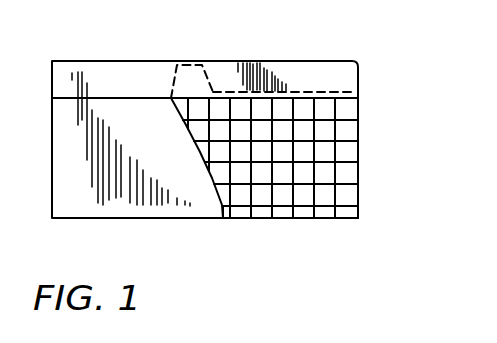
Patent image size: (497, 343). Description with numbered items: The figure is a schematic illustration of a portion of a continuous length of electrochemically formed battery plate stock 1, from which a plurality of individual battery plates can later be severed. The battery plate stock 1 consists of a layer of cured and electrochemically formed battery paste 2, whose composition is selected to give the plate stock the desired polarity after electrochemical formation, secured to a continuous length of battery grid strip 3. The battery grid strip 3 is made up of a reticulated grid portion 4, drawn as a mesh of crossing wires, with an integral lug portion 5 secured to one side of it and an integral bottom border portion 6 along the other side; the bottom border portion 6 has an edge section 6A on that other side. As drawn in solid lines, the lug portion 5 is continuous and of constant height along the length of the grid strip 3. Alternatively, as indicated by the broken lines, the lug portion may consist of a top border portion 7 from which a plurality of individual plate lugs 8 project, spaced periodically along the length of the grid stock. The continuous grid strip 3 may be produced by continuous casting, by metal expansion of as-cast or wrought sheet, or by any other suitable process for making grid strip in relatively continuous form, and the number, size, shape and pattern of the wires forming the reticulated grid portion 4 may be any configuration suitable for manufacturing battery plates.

The battery plate stock 1 is at (150, 46).
The battery paste 2 is at (140, 210).
The battery grid strip 3 is at (336, 153).
The reticulated grid portion 4 is at (349, 118).
The lug portion 5 is at (262, 88).
The bottom border portion 6 is at (342, 208).
The edge section 6A is at (276, 219).
The top border portion 7 is at (303, 92).
The plate lugs 8 is at (198, 67).